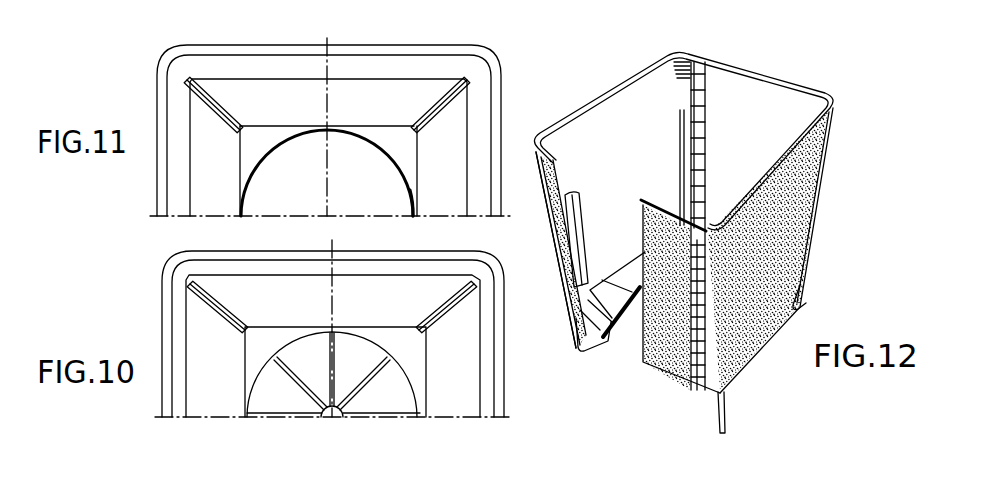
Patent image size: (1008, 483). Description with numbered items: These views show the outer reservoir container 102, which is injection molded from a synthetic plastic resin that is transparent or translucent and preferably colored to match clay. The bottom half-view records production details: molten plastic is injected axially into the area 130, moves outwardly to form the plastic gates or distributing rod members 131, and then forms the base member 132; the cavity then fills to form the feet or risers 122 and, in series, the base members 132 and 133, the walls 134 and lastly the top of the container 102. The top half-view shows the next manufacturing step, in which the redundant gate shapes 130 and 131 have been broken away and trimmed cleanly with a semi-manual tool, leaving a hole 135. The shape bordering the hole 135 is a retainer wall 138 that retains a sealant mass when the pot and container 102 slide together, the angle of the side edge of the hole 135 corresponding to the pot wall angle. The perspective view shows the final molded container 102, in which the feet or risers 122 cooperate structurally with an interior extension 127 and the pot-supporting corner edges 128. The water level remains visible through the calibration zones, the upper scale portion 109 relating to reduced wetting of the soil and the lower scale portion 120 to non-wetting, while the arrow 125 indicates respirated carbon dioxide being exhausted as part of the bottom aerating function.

In FIG. 11, the container 102 is at (493, 65).
In FIG. 10, the container 102 is at (503, 394).
In FIG. 12, the container 102 is at (800, 83).
In FIG. 12, the upper scale portion 109 is at (700, 65).
In FIG. 12, the lower scale portion 120 is at (707, 170).
In FIG. 10, the feet or risers 122 is at (207, 273).
In FIG. 12, the feet or risers 122 is at (727, 417).
In FIG. 12, the arrow 125 is at (647, 253).
In FIG. 11, the interior extension 127 is at (220, 101).
In FIG. 12, the interior extension 127 is at (575, 220).
In FIG. 11, the corner edges 128 is at (423, 103).
In FIG. 12, the corner edges 128 is at (677, 127).
In FIG. 10, the area 130 is at (338, 424).
In FIG. 10, the distributing rod members 131 is at (368, 388).
In FIG. 11, the base member 132 is at (413, 171).
In FIG. 10, the base member 132 is at (423, 398).
In FIG. 12, the base member 132 is at (630, 295).
In FIG. 11, the base member 133 is at (457, 205).
In FIG. 10, the base member 133 is at (462, 402).
In FIG. 12, the base member 133 is at (612, 330).
In FIG. 11, the walls 134 is at (175, 175).
In FIG. 10, the walls 134 is at (488, 403).
In FIG. 12, the walls 134 is at (548, 338).
In FIG. 11, the hole 135 is at (373, 158).
In FIG. 11, the retainer wall 138 is at (413, 196).